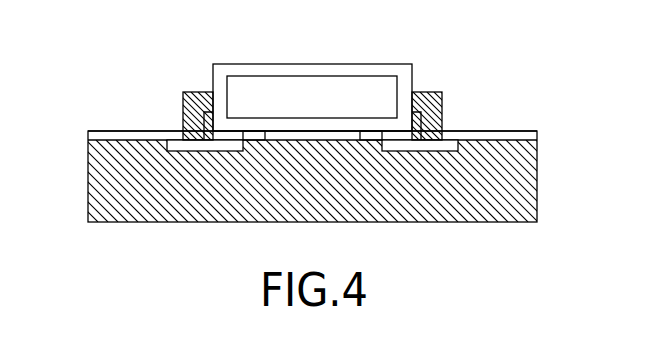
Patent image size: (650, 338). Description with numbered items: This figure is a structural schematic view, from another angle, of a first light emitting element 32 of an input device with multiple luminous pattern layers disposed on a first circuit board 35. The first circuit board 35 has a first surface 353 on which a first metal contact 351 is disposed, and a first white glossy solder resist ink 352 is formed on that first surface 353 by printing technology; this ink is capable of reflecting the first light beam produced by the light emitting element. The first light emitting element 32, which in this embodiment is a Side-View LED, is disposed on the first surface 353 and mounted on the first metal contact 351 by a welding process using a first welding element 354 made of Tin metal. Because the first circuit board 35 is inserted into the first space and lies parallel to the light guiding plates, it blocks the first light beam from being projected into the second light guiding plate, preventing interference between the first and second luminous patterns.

The first light emitting element 32 is at (309, 90).
The first circuit board 35 is at (107, 190).
The first metal contact 351 is at (212, 147).
The first white glossy solder resist ink 352 is at (460, 134).
The first surface 353 is at (517, 138).
The first welding element 354 is at (183, 108).